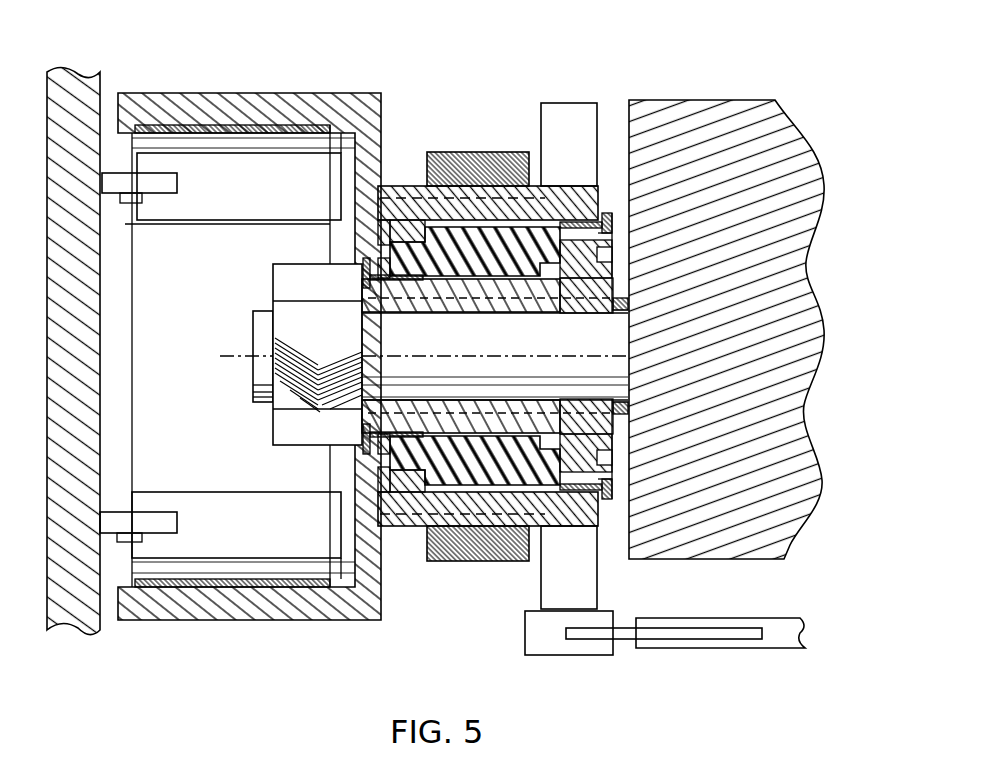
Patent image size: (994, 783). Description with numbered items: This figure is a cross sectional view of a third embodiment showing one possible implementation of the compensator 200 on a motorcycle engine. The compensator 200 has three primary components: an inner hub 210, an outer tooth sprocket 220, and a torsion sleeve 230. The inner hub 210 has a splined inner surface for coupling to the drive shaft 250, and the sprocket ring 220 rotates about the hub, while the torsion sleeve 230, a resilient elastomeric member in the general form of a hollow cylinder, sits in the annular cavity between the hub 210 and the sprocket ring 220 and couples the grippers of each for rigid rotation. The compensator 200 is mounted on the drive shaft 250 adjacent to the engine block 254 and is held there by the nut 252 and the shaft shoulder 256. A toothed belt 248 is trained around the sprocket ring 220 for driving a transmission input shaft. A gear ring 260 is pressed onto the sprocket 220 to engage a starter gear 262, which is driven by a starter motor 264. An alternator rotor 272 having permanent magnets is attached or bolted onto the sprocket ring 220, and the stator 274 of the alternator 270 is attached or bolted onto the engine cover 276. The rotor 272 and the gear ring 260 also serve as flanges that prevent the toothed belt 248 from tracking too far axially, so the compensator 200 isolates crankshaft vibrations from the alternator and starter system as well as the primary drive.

The compensator 200 is at (541, 321).
The inner hub 210 is at (408, 292).
The outer tooth sprocket 220 is at (408, 186).
The torsion sleeve 230 is at (522, 302).
The toothed belt 248 is at (500, 562).
The drive shaft 250 is at (257, 338).
The nut 252 is at (283, 397).
The engine block 254 is at (796, 368).
The shaft shoulder 256 is at (624, 406).
The gear ring 260 is at (585, 110).
The starter gear 262 is at (542, 648).
The starter motor 264 is at (693, 643).
The alternator 270 is at (240, 398).
The alternator rotor 272 is at (280, 610).
The stator 274 is at (235, 498).
The engine cover 276 is at (90, 103).